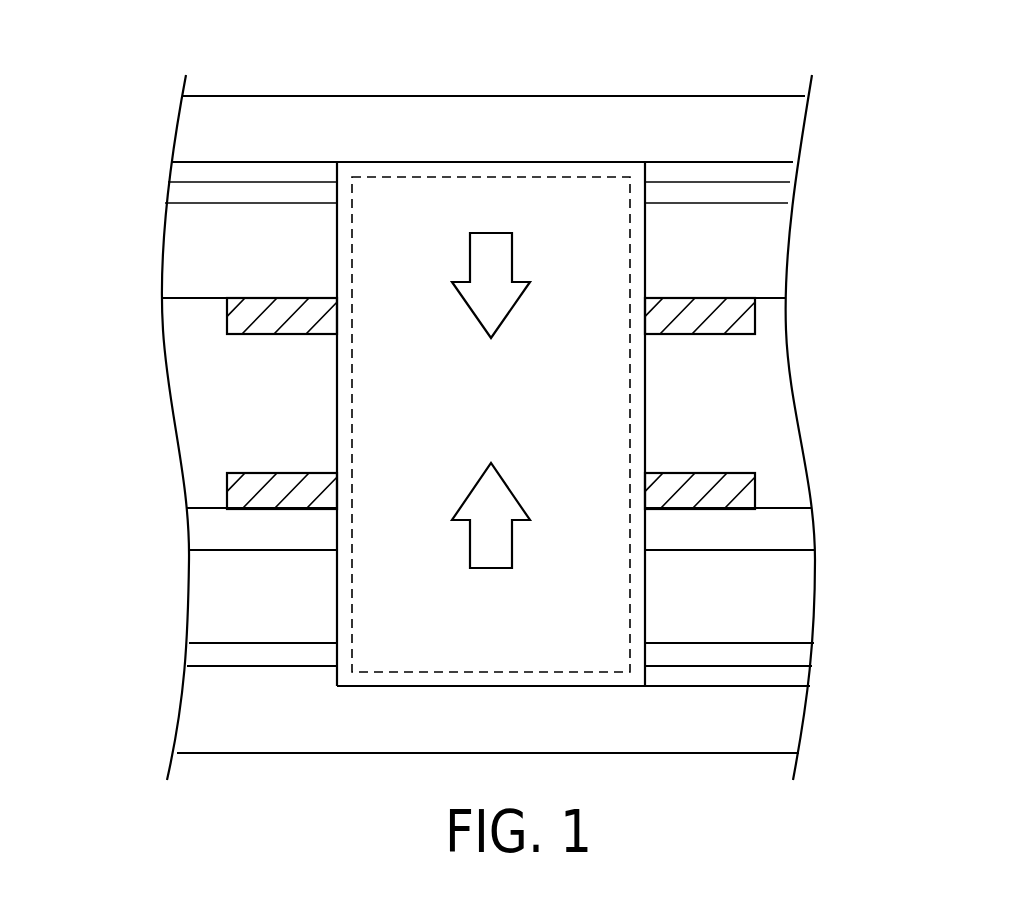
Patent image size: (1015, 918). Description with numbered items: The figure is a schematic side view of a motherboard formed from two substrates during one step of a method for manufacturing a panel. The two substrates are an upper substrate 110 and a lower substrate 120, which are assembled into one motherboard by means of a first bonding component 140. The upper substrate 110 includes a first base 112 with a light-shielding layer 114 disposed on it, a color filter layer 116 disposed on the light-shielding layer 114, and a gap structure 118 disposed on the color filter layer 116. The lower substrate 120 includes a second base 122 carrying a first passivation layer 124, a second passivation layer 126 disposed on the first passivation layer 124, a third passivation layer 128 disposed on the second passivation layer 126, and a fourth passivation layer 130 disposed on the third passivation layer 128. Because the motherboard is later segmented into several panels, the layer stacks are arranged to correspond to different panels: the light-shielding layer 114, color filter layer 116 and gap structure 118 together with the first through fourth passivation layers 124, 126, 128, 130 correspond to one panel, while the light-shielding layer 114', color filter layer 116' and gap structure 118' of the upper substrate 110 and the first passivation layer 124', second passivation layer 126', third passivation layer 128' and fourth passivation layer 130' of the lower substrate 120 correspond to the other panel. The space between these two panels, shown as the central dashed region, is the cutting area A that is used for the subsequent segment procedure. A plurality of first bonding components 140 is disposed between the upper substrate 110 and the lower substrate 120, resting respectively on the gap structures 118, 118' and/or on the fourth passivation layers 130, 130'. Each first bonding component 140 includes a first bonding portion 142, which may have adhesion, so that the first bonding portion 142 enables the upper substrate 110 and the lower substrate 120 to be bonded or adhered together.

The cutting area A is at (494, 175).
The upper substrate 110 is at (927, 112).
The first base 112 is at (787, 130).
The light-shielding layer 114 is at (782, 178).
The color filter layer 116 is at (782, 216).
The gap structure 118 is at (782, 268).
The light-shielding layer 114' is at (190, 176).
The color filter layer 116' is at (190, 215).
The gap structure 118' is at (190, 268).
The lower substrate 120 is at (927, 512).
The second base 122 is at (792, 720).
The first passivation layer 124 is at (782, 683).
The second passivation layer 126 is at (782, 648).
The third passivation layer 128 is at (782, 588).
The fourth passivation layer 130 is at (782, 532).
The first passivation layer 124' is at (198, 686).
The second passivation layer 126' is at (198, 648).
The third passivation layer 128' is at (198, 587).
The fourth passivation layer 130' is at (198, 532).
The first bonding component 140 is at (772, 316).
The first bonding portion 142 is at (702, 335).